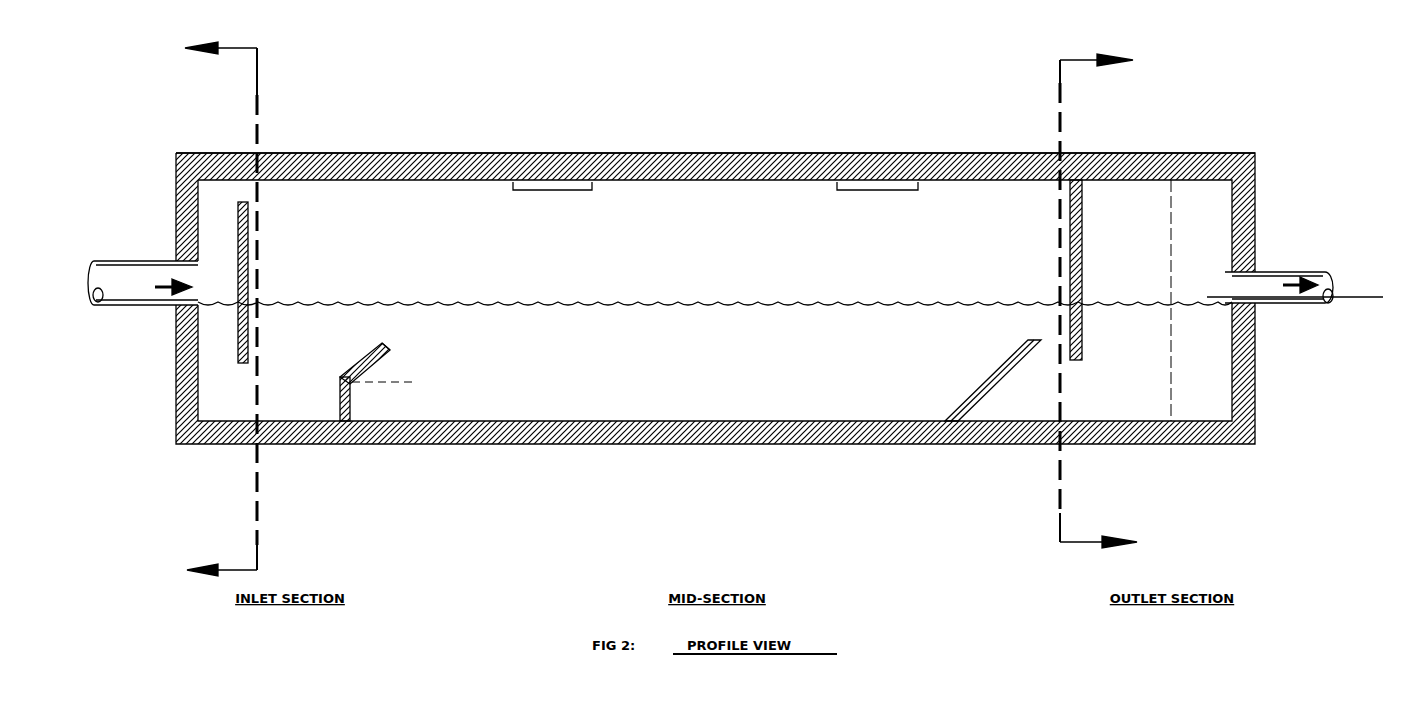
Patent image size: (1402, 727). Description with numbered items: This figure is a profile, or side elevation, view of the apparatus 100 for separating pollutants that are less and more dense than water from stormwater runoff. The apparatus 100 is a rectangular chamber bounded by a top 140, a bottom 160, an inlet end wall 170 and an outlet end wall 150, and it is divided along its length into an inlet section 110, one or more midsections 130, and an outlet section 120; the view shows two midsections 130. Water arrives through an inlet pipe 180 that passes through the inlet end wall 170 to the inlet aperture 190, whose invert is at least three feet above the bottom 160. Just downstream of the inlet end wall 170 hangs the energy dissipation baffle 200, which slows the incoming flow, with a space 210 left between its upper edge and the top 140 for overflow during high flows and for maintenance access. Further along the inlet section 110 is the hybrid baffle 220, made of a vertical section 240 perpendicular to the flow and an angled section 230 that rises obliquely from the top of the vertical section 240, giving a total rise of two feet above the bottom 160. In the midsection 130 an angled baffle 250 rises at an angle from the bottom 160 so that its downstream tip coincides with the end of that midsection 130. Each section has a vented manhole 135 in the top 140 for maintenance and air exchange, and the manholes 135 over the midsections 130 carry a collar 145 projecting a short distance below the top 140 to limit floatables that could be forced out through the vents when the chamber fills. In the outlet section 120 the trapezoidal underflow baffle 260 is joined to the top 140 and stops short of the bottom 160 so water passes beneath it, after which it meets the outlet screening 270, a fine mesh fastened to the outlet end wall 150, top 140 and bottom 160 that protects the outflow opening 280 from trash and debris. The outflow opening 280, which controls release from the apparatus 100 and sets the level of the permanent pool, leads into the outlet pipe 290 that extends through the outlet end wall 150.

The apparatus 100 is at (697, 95).
The inlet section 110 is at (243, 148).
The outlet section 120 is at (1267, 125).
The midsection 130 is at (632, 125).
The manhole 135 is at (340, 153).
The top 140 is at (781, 153).
The collar 145 is at (512, 190).
The outlet end wall 150 is at (1255, 188).
The bottom 160 is at (798, 444).
The inlet end wall 170 is at (176, 217).
The inlet pipe 180 is at (142, 308).
The inlet aperture 190 is at (198, 285).
The energy dissipation baffle 200 is at (248, 232).
The space 210 is at (242, 192).
The hybrid baffle 220 is at (333, 371).
The angled section 230 is at (373, 343).
The vertical section 240 is at (340, 406).
The angled baffle 250 is at (1017, 352).
The trapezoidal underflow baffle 260 is at (1070, 255).
The outlet screening 270 is at (1167, 255).
The outflow opening 280 is at (1222, 300).
The outlet pipe 290 is at (1287, 267).